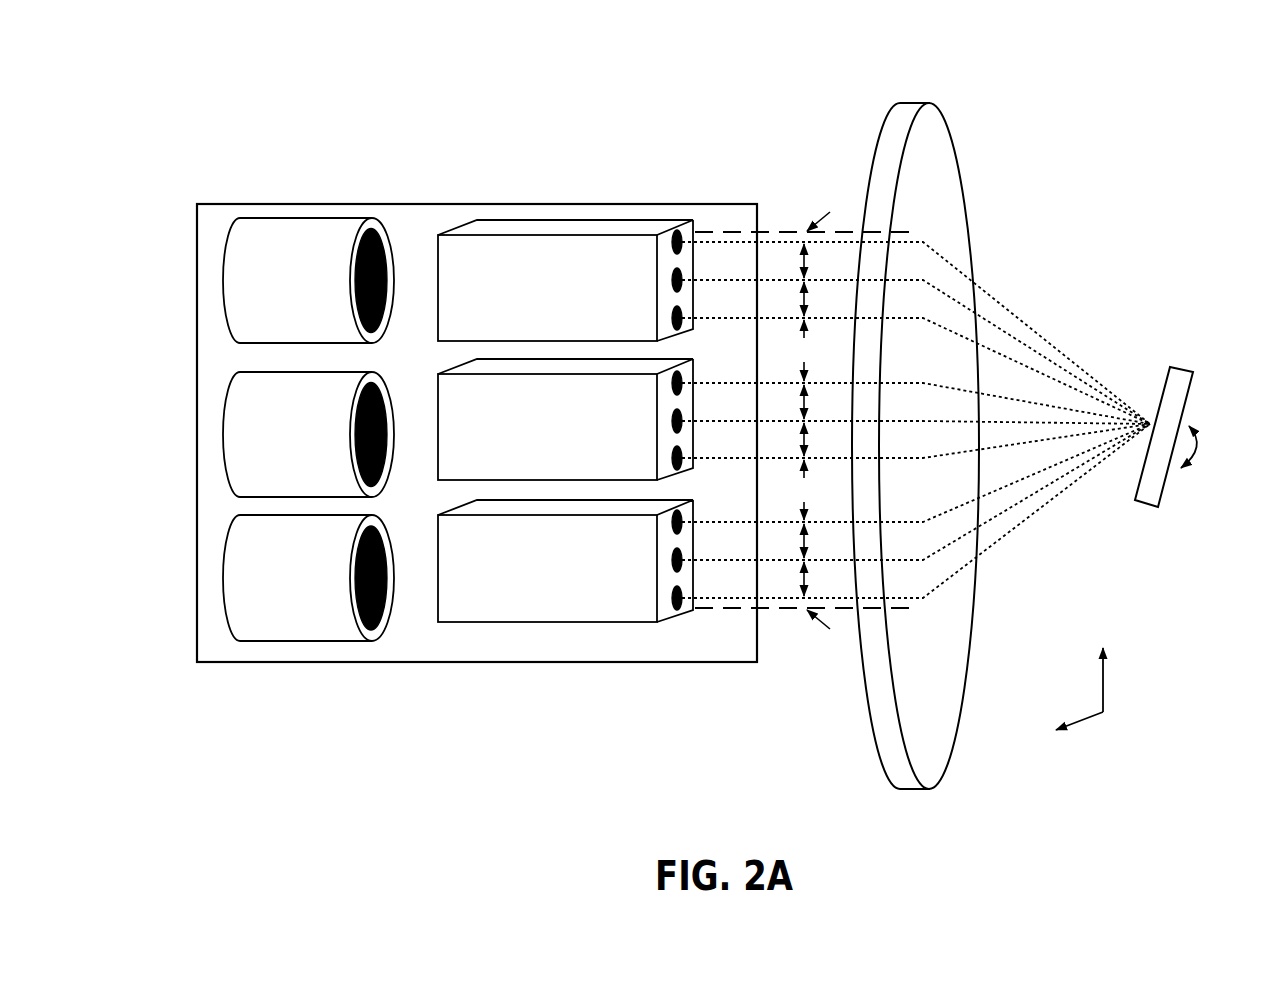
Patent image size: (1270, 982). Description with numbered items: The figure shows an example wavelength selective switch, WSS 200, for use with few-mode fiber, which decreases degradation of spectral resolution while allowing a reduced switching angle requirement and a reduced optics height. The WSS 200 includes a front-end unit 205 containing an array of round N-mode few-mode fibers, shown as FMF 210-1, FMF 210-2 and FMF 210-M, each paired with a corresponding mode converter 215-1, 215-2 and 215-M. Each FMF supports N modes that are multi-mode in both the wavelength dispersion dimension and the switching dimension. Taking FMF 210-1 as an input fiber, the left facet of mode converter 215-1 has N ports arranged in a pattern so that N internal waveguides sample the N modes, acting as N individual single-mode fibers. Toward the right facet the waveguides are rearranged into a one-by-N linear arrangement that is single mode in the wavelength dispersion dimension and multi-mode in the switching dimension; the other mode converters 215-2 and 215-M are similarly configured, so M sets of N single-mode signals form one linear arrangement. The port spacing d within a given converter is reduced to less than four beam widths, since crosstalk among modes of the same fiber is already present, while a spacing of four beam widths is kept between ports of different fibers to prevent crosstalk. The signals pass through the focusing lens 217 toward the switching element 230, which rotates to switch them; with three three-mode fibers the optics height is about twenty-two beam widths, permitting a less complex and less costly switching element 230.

The WSS 200 is at (271, 79).
The front-end unit 205 is at (477, 414).
The FMF 210-1 is at (308, 280).
The FMF 210-2 is at (308, 434).
The FMF 210-M is at (308, 578).
The mode converter 215-1 is at (565, 280).
The mode converter 215-2 is at (565, 419).
The mode converter 215-M is at (565, 561).
The lens 217 is at (915, 433).
The switching element 230 is at (1178, 391).